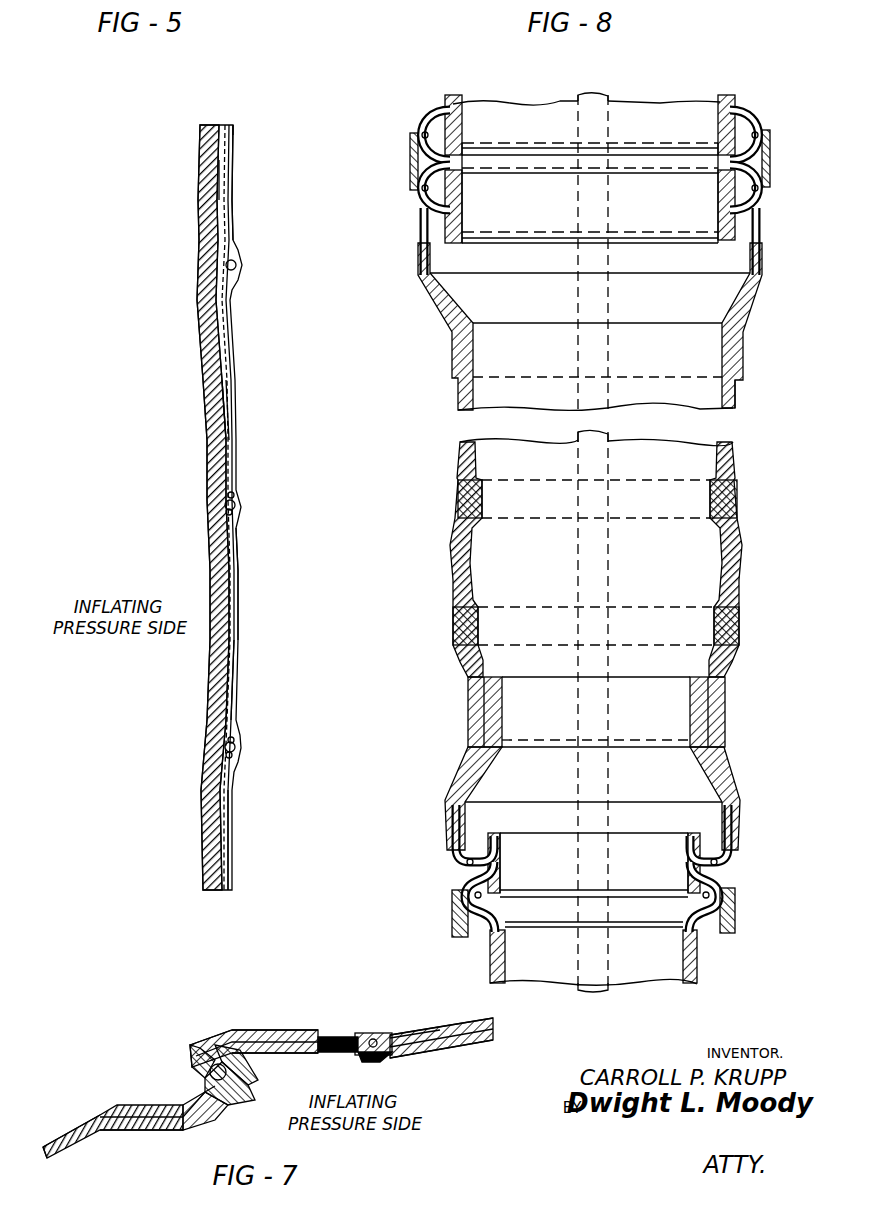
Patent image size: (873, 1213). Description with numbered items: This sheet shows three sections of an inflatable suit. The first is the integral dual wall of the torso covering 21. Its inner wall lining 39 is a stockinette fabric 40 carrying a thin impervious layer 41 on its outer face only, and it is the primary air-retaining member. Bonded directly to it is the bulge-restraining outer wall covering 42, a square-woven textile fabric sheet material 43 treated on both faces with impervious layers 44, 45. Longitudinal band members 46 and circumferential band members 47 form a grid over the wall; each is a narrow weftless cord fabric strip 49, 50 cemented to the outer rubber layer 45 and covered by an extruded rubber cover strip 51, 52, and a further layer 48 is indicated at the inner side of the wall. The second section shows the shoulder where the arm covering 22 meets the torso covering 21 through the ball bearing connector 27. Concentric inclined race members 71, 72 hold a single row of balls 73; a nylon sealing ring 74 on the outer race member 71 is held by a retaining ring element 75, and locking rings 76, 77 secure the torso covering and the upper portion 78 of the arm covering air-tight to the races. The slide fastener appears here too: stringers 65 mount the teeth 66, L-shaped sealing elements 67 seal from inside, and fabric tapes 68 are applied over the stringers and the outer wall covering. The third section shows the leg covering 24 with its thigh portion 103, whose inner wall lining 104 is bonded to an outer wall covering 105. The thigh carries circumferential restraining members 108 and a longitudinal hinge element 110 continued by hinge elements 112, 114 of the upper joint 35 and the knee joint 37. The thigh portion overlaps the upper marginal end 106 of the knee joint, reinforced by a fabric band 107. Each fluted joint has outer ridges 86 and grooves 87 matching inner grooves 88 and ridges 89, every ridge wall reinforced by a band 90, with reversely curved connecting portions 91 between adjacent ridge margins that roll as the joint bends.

In FIG. 5, the torso covering 21 is at (249, 152).
In FIG. 5, the inner wall lining 39 is at (199, 404).
In FIG. 7, the inner wall lining 39 is at (296, 1053).
In FIG. 5, the stockinette fabric 40 is at (200, 312).
In FIG. 5, the impervious layer 41 is at (205, 340).
In FIG. 5, the outer wall covering 42 is at (234, 212).
In FIG. 7, the outer wall covering 42 is at (495, 1024).
In FIG. 5, the textile fabric sheet material 43 is at (222, 178).
In FIG. 5, the impervious layer 44 is at (228, 400).
In FIG. 5, the outer rubber layer 45 is at (226, 392).
In FIG. 5, the longitudinal band member 46 is at (235, 670).
In FIG. 5, the circumferential band member 47 is at (236, 265).
In FIG. 5, the inner liner 48 is at (237, 440).
In FIG. 5, the weftless cord fabric strip 49 is at (232, 512).
In FIG. 5, the weftless cord fabric strip 50 is at (232, 795).
In FIG. 5, the rubber cover strip 51 is at (234, 495).
In FIG. 5, the rubber cover strip 52 is at (236, 570).
In FIG. 7, the arm covering 22 is at (80, 1113).
In FIG. 7, the ball bearing connector 27 is at (176, 1036).
In FIG. 7, the stringer 65 is at (340, 1038).
In FIG. 7, the teeth 66 is at (366, 1035).
In FIG. 7, the sealing element 67 is at (362, 1064).
In FIG. 7, the fabric tape 68 is at (322, 1035).
In FIG. 7, the outer race member 71 is at (188, 1072).
In FIG. 7, the inner race member 72 is at (195, 1098).
In FIG. 7, the ball 73 is at (208, 1078).
In FIG. 7, the nylon sealing ring 74 is at (250, 1075).
In FIG. 7, the retaining ring element 75 is at (250, 1058).
In FIG. 7, the locking ring 76 is at (203, 1042).
In FIG. 7, the locking ring 77 is at (225, 1110).
In FIG. 7, the upper portion 78 is at (72, 1136).
In FIG. 8, the leg covering 24 is at (425, 490).
In FIG. 8, the upper joint 35 is at (400, 164).
In FIG. 8, the knee joint 37 is at (445, 879).
In FIG. 8, the outer ridge 86 is at (770, 175).
In FIG. 8, the groove 87 is at (745, 130).
In FIG. 8, the groove 88 is at (765, 160).
In FIG. 8, the inner ridge 89 is at (718, 127).
In FIG. 8, the reinforcing band 90 is at (736, 100).
In FIG. 8, the connecting portion 91 is at (755, 140).
In FIG. 8, the thigh portion 103 is at (443, 400).
In FIG. 8, the inner wall lining 104 is at (722, 345).
In FIG. 8, the outer wall covering 105 is at (740, 390).
In FIG. 8, the upper marginal end 106 is at (690, 705).
In FIG. 8, the fabric band 107 is at (466, 706).
In FIG. 8, the restraining member 108 is at (738, 508).
In FIG. 8, the hinge element 110 is at (610, 440).
In FIG. 8, the hinge element 112 is at (578, 124).
In FIG. 8, the hinge element 114 is at (610, 772).